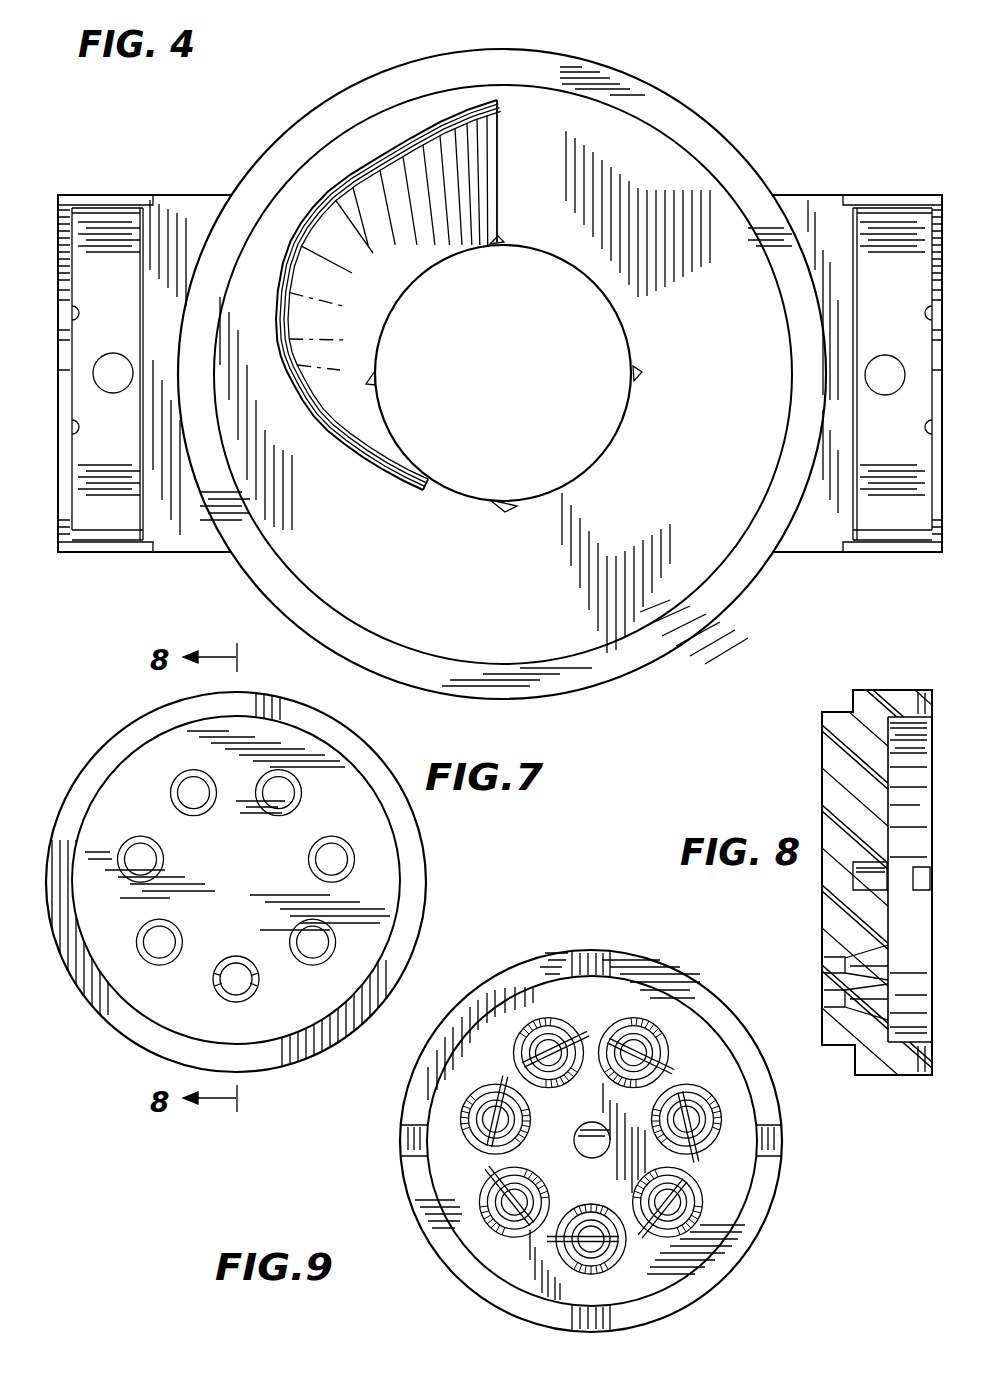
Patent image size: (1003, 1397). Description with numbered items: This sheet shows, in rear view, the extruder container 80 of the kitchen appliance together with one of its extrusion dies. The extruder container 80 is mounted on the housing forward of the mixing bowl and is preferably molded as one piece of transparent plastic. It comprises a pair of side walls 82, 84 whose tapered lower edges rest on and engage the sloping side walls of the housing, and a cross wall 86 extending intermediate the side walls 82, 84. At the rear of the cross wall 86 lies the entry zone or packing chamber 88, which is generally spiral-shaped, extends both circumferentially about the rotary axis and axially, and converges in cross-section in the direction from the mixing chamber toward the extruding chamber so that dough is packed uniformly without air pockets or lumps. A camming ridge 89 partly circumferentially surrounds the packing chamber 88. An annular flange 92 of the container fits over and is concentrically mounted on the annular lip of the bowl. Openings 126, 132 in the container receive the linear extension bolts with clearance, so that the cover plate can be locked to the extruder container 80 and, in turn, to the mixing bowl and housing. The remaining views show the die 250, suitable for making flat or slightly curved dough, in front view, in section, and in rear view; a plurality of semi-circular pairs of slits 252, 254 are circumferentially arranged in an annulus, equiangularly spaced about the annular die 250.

In FIG. 4, the extruder container 80 is at (780, 184).
In FIG. 4, the side wall 82 is at (936, 400).
In FIG. 4, the side wall 84 is at (70, 405).
In FIG. 4, the cross wall 86 is at (805, 546).
In FIG. 4, the packing chamber 88 is at (378, 315).
In FIG. 4, the camming ridge 89 is at (290, 215).
In FIG. 4, the annular flange 92 is at (667, 105).
In FIG. 4, the opening 126 is at (900, 340).
In FIG. 4, the opening 132 is at (112, 384).
In FIG. 7, the die 250 is at (412, 868).
In FIG. 8, the die 250 is at (819, 771).
In FIG. 9, the die 250 is at (752, 1190).
In FIG. 7, the slit 252 is at (237, 958).
In FIG. 8, the slit 252 is at (826, 961).
In FIG. 9, the slit 252 is at (637, 1022).
In FIG. 7, the slit 254 is at (232, 1000).
In FIG. 8, the slit 254 is at (826, 1001).
In FIG. 9, the slit 254 is at (617, 1261).